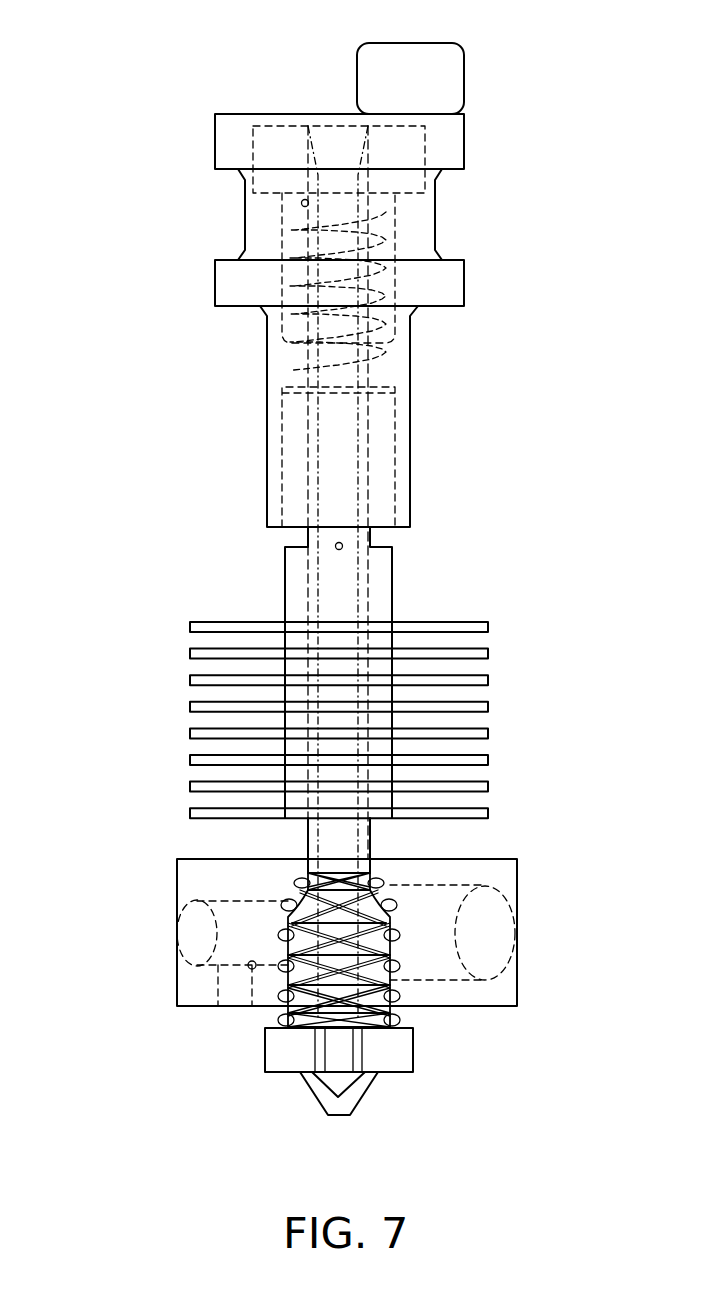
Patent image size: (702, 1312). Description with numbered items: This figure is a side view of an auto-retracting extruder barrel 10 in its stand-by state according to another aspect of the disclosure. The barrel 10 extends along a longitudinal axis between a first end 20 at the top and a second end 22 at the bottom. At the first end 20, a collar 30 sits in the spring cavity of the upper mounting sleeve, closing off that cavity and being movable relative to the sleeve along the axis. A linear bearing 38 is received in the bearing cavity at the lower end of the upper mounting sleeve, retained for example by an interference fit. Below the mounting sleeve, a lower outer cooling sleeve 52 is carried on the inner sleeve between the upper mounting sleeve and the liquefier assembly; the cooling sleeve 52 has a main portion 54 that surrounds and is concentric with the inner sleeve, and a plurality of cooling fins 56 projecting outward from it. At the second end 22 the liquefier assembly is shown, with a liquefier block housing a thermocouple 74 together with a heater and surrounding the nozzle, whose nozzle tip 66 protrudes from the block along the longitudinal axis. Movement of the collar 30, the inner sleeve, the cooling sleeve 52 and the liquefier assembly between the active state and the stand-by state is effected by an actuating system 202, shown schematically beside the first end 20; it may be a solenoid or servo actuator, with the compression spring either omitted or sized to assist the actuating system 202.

The extruder barrel 10 is at (114, 120).
The first end 20 is at (327, 76).
The actuating system 202 is at (457, 78).
The collar 30 is at (282, 150).
The linear bearing 38 is at (298, 438).
The lower outer cooling sleeve 52 is at (341, 543).
The main portion 54 is at (297, 603).
The cooling fins 56 is at (456, 694).
The second end 22 is at (486, 1050).
The thermocouple 74 is at (249, 962).
The nozzle tip 66 is at (360, 1121).